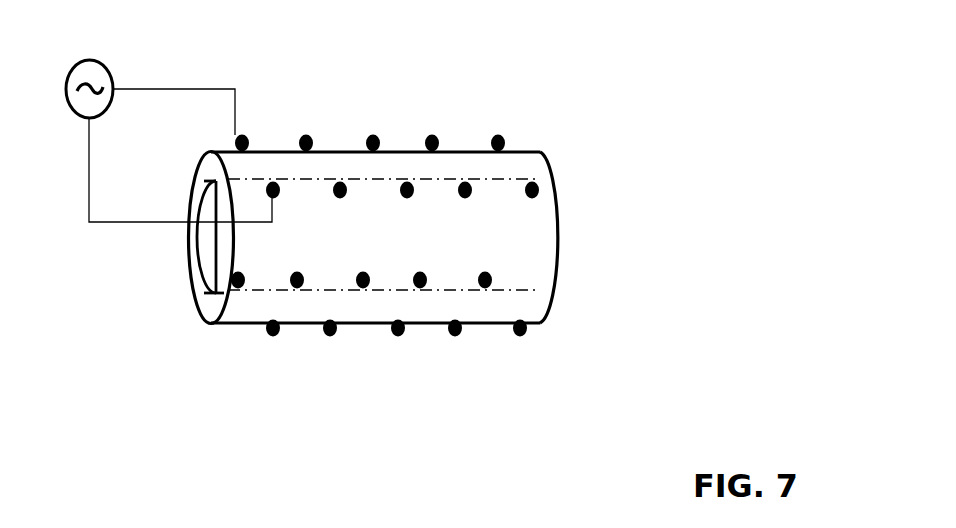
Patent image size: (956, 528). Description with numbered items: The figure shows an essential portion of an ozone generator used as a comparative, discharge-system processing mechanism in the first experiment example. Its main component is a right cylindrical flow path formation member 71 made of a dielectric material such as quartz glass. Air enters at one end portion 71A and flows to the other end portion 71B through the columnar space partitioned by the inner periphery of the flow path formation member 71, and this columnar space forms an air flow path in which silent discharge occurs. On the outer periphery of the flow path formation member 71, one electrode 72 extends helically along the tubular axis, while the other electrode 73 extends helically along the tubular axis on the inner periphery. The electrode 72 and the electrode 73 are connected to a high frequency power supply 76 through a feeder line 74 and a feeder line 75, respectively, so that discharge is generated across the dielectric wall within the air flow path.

The flow path formation member 71 is at (455, 152).
The one end portion 71A is at (205, 260).
The other end portion 71B is at (563, 250).
The one electrode 72 is at (306, 136).
The other electrode 73 is at (535, 197).
The feeder line 74 is at (195, 89).
The feeder line 75 is at (128, 222).
The high frequency power supply 76 is at (107, 67).